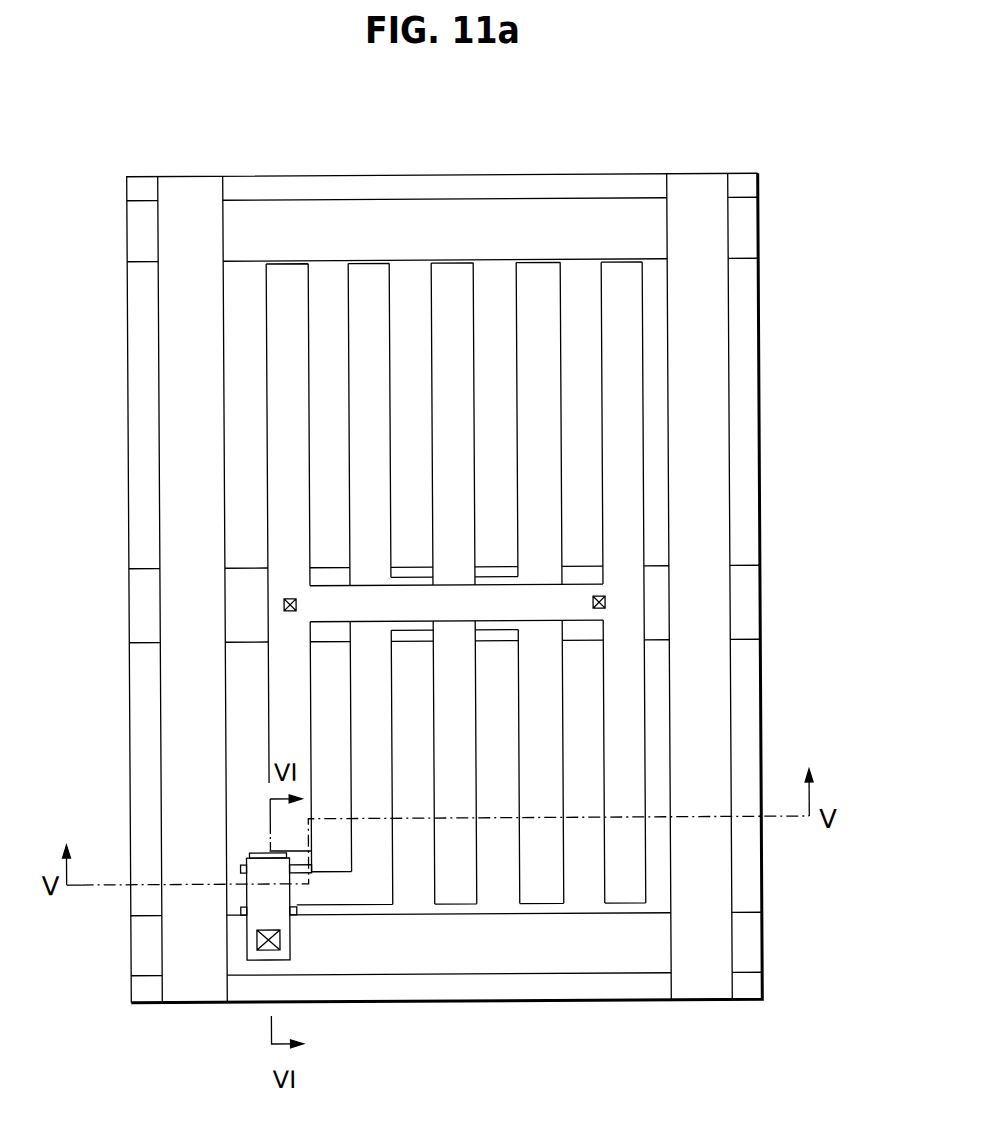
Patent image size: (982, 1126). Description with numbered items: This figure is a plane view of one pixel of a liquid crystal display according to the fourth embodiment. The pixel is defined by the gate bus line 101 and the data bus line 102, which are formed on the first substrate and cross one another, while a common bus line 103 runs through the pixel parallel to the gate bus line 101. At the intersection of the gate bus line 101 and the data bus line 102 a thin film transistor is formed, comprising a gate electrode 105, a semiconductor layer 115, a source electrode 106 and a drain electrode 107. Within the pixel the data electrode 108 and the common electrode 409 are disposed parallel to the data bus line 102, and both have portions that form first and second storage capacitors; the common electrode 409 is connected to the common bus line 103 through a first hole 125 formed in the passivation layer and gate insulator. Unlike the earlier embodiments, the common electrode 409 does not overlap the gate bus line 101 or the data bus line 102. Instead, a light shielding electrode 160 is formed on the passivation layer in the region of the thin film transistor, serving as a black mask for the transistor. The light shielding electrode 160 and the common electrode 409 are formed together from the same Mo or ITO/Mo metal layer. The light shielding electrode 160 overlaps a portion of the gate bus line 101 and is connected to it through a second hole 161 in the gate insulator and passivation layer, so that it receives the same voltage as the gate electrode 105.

The gate bus line 101 is at (748, 946).
The data bus line 102 is at (695, 972).
The common bus line 103 is at (748, 600).
The gate electrode 105 is at (256, 853).
The source electrode 106 is at (242, 890).
The drain electrode 107 is at (292, 888).
The data electrode 108 is at (540, 888).
The semiconductor layer 115 is at (241, 867).
The first hole 125 is at (236, 605).
The light shielding electrode 160 is at (241, 915).
The second hole 161 is at (268, 950).
The common electrode 409 is at (452, 890).